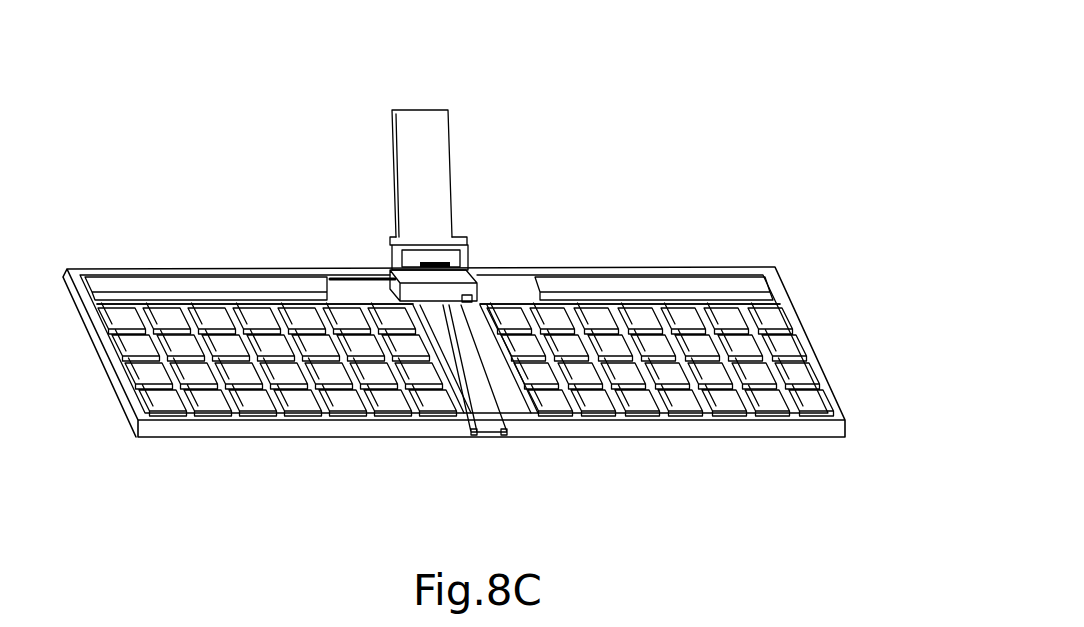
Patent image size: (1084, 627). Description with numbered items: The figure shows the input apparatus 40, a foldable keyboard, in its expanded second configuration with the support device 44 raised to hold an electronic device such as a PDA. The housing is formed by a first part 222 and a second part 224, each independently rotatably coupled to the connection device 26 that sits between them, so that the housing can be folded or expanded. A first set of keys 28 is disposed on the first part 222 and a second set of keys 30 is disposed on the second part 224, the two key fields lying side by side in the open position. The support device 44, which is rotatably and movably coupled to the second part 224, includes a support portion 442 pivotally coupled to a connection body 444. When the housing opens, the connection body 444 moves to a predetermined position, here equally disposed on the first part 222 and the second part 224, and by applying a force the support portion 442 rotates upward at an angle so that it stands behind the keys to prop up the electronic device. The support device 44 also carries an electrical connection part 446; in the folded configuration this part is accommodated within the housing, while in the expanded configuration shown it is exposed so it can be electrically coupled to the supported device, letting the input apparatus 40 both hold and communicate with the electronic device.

The input apparatus 40 is at (461, 261).
The support device 44 is at (511, 206).
The support portion 442 is at (433, 153).
The connection body 444 is at (480, 282).
The electrical connection part 446 is at (450, 266).
The first set of keys 28 is at (172, 348).
The second set of keys 30 is at (755, 375).
The first part 222 is at (251, 390).
The second part 224 is at (685, 391).
The connection device 26 is at (490, 422).